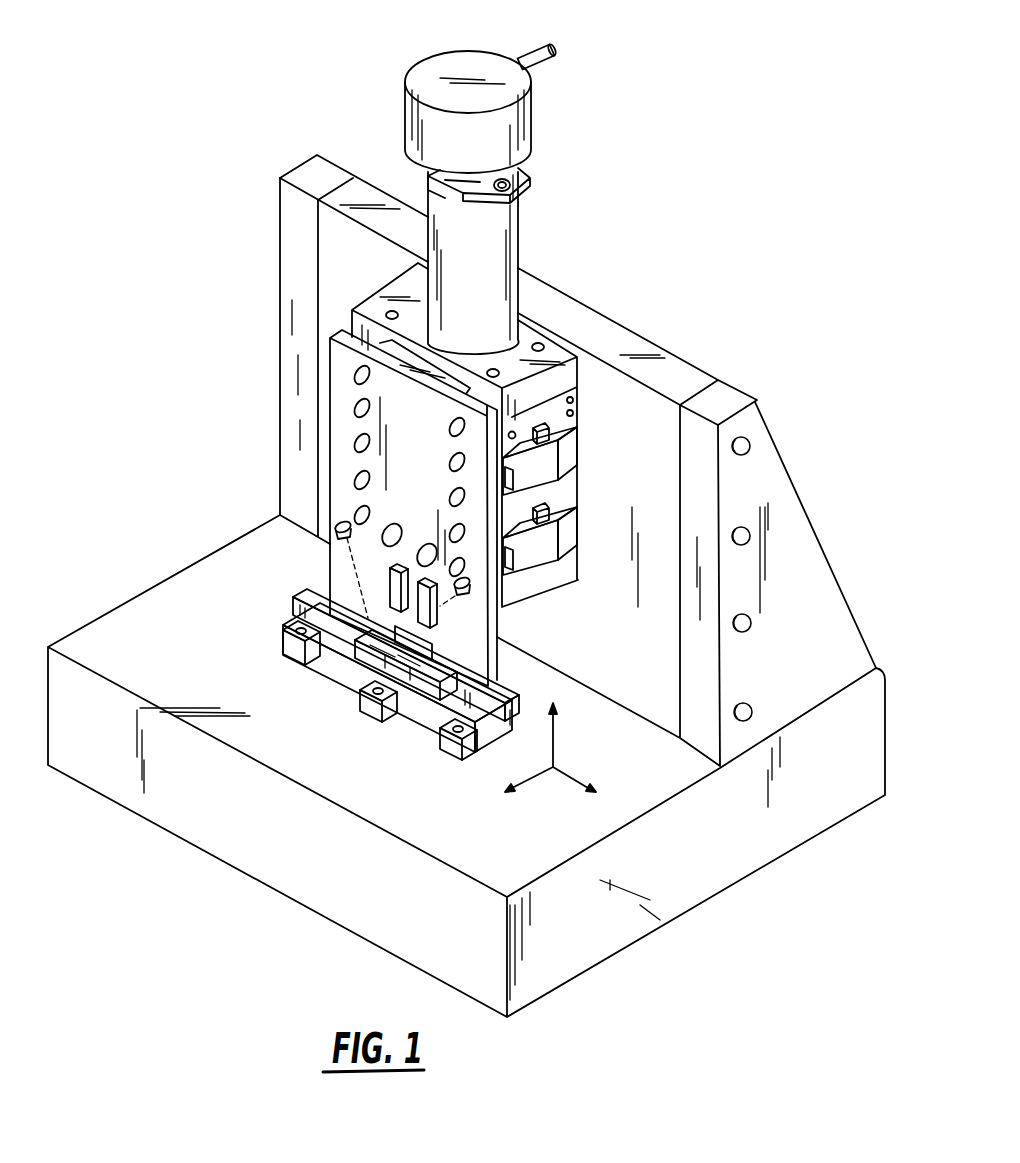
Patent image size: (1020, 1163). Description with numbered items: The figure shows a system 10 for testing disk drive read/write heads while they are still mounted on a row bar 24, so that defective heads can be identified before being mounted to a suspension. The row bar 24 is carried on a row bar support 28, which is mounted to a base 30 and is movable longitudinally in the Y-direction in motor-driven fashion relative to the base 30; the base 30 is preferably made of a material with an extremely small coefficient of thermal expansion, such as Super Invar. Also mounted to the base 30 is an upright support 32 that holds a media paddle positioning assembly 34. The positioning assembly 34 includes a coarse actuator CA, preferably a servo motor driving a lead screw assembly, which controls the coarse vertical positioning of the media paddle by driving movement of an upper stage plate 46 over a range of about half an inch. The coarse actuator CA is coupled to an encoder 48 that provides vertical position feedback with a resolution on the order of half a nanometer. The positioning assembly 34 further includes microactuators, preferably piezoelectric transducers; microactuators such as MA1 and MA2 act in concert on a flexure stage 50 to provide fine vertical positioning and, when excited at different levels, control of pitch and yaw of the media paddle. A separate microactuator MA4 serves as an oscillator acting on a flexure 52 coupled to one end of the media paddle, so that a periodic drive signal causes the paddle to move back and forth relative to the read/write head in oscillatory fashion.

The system 10 is at (208, 96).
The row bar 24 is at (416, 668).
The row bar support 28 is at (450, 700).
The base 30 is at (162, 680).
The support 32 is at (648, 352).
The media paddle positioning assembly 34 is at (439, 179).
The upper stage plate 46 is at (348, 348).
The encoder 48 is at (455, 77).
The flexure stage 50 is at (432, 652).
The flexure 52 is at (413, 641).
The coarse actuator CA is at (500, 247).
The microactuator MA1 is at (425, 612).
The microactuator MA2 is at (432, 614).
The microactuator MA4 is at (417, 638).